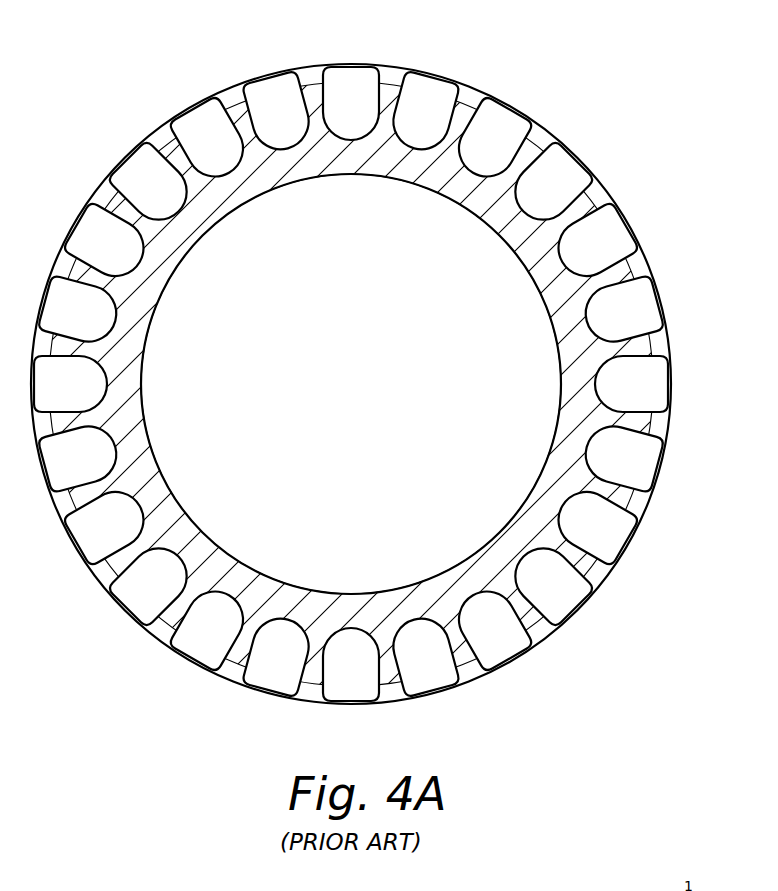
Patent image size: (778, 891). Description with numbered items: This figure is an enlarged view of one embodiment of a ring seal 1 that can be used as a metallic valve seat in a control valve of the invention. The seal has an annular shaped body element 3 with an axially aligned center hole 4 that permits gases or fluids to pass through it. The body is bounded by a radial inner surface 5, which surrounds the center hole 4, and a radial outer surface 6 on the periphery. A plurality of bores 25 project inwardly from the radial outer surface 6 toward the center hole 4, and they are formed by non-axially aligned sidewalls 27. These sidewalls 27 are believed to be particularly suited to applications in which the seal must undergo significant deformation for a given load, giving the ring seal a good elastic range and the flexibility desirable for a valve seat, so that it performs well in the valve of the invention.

The stator core 1 is at (389, 375).
The annular shaped body element 3 is at (389, 375).
The axial aligned center hole 4 is at (353, 256).
The radial inner surface 5 is at (560, 364).
The radial outer surface 6 is at (651, 269).
The bores 25 is at (352, 70).
The non-axially aligned sidewalls 27 is at (463, 115).